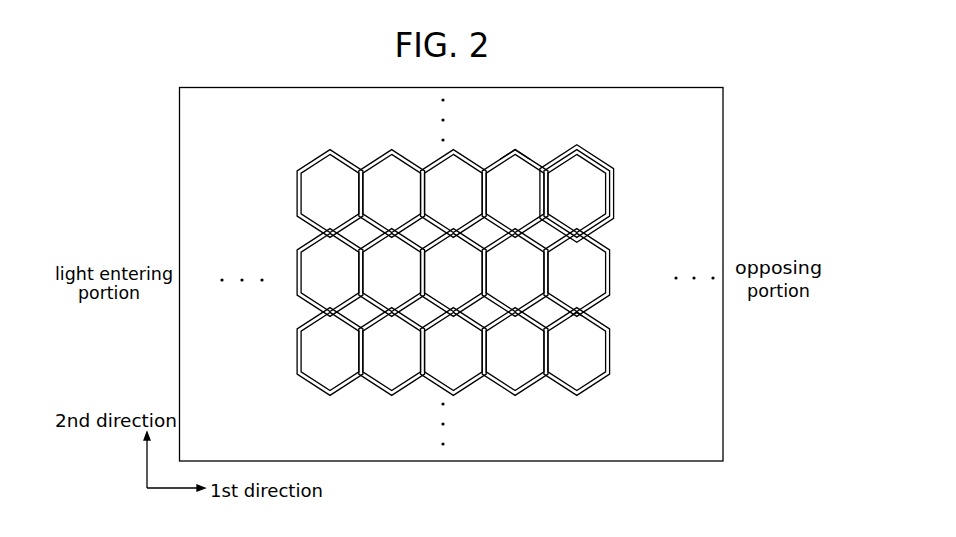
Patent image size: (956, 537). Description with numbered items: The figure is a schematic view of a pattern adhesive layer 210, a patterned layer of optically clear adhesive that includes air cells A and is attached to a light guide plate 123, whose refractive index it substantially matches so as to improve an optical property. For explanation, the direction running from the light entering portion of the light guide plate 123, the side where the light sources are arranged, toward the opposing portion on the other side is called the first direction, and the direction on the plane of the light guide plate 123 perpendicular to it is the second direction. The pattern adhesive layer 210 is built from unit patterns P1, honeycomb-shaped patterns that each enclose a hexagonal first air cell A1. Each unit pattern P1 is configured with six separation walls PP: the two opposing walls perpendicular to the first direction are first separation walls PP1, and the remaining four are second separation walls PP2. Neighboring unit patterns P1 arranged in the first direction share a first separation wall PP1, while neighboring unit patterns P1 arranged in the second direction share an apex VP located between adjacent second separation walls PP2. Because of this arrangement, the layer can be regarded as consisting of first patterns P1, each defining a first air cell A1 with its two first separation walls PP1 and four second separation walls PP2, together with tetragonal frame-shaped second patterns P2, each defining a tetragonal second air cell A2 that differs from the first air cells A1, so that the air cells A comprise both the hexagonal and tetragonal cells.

The light guide plate 123 is at (723, 402).
The pattern adhesive layer 210 is at (502, 249).
The apex VP is at (515, 149).
The second separation wall PP2 is at (515, 170).
The first separation wall PP1 is at (599, 198).
The unit pattern P1 is at (601, 193).
The separation wall PP is at (603, 194).
The first air cell A1 is at (590, 273).
The second air cell A2 is at (555, 319).
The second pattern P2 is at (562, 297).
The air cell A is at (614, 312).